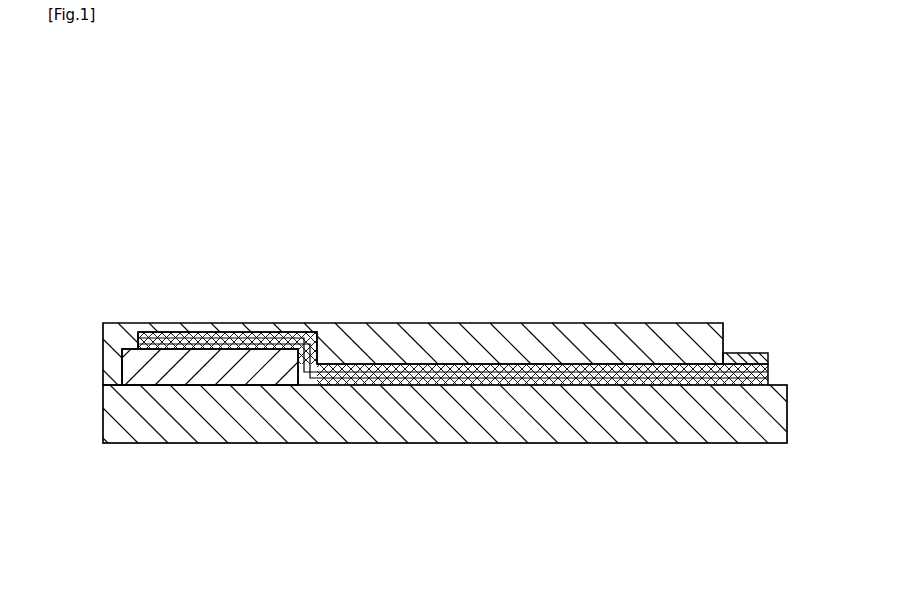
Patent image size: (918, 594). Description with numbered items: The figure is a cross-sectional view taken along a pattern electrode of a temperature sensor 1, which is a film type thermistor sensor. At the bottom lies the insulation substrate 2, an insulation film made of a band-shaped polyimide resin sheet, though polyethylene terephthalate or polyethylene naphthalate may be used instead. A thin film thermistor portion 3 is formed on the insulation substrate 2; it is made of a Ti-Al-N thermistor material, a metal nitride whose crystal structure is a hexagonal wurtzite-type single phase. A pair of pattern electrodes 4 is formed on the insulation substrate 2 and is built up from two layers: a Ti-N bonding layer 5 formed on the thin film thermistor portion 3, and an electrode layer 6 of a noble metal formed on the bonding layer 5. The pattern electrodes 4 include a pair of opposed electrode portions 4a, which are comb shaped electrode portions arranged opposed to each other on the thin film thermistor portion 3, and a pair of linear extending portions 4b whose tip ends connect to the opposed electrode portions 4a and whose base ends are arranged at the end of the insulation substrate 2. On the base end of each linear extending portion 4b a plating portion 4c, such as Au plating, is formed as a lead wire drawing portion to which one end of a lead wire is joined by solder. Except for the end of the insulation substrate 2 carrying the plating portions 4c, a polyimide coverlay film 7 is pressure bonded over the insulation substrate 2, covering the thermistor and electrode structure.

The temperature sensor 1 is at (698, 194).
The insulation substrate 2 is at (672, 443).
The thin film thermistor portion 3 is at (122, 340).
The pattern electrodes 4 is at (453, 398).
The opposed electrode portions 4a is at (223, 332).
The linear extending portions 4b is at (565, 364).
The plating portion 4c is at (760, 353).
The bonding layer 5 is at (433, 385).
The electrode layer 6 is at (472, 378).
The coverlay film 7 is at (400, 323).